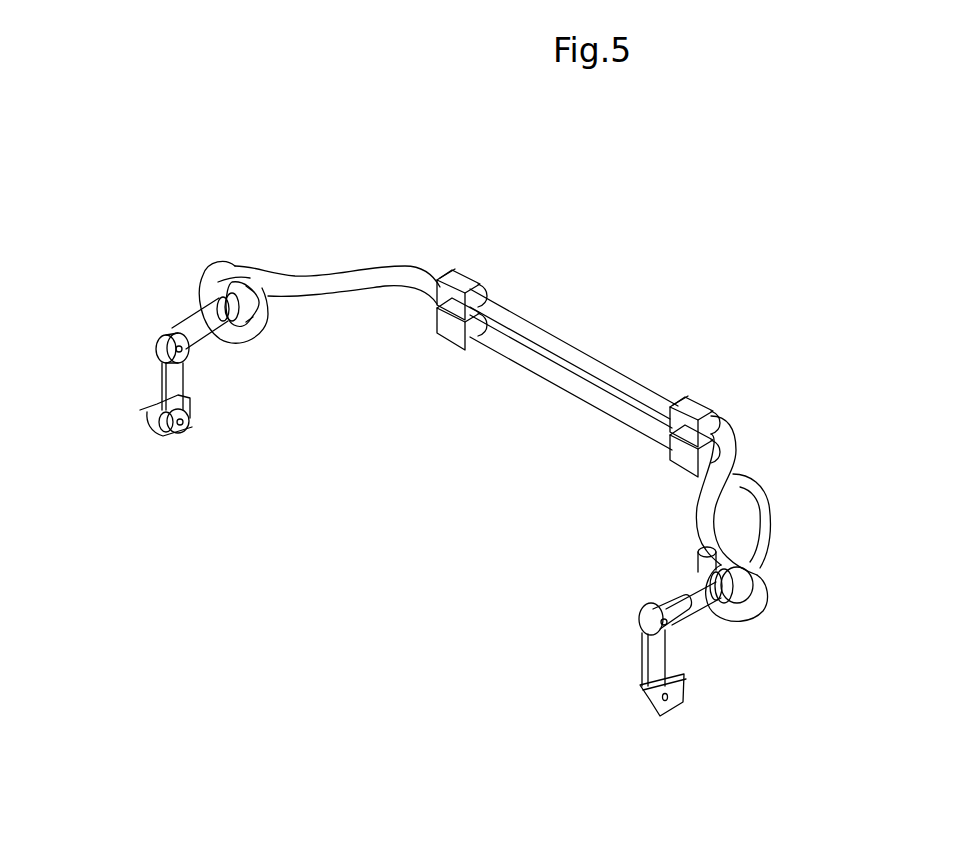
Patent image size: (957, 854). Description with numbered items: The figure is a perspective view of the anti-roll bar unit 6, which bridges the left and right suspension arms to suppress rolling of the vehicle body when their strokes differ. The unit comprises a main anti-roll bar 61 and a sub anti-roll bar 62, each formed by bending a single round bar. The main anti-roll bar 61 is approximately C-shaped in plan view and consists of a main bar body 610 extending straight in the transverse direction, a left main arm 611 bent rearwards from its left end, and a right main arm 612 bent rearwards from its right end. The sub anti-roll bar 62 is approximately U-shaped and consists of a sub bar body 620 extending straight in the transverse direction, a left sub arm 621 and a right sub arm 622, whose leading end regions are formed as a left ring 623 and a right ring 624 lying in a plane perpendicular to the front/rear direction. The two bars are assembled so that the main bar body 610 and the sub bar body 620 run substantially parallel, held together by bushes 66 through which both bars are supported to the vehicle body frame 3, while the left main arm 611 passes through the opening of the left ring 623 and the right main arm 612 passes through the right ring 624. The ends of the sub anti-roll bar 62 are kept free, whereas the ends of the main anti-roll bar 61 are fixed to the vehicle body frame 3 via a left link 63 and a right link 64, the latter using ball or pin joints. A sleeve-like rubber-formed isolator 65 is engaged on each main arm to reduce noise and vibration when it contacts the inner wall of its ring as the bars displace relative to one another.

The vehicle body frame 3 is at (187, 413).
The anti-roll bar unit 6 is at (637, 291).
The main anti-roll bar 61 is at (528, 377).
The main bar body 610 is at (571, 388).
The left main arm 611 is at (200, 325).
The right main arm 612 is at (694, 599).
The sub anti-roll bar 62 is at (576, 339).
The sub bar body 620 is at (518, 320).
The left sub arm 621 is at (333, 268).
The right sub arm 622 is at (722, 497).
The left ring 623 is at (257, 327).
The right ring 624 is at (756, 601).
The left link 63 is at (160, 379).
The right link 64 is at (643, 657).
The rubber-formed isolator 65 is at (250, 262).
The bush 66 is at (468, 274).